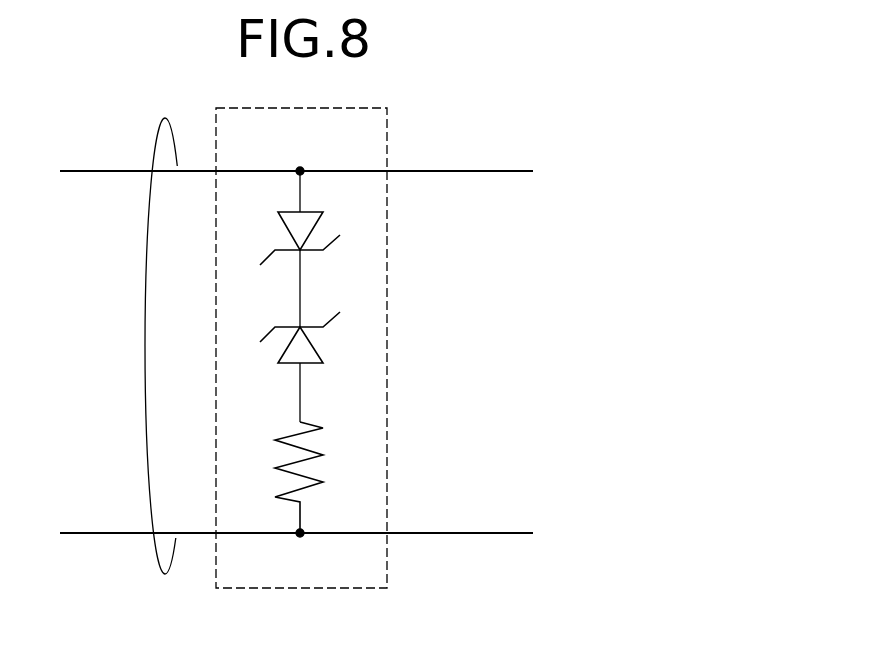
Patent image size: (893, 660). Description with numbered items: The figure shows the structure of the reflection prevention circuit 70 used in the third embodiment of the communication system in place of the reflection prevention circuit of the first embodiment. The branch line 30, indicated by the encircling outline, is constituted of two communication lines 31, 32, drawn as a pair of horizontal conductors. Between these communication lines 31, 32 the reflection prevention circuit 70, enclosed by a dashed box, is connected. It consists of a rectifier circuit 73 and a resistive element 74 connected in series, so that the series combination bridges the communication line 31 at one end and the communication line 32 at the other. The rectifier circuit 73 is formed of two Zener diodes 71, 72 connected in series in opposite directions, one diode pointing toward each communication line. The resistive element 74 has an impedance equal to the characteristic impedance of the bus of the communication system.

The communication line 31 is at (85, 171).
The communication line 32 is at (73, 532).
The branch line 30 is at (165, 574).
The reflection prevention circuit 70 is at (388, 132).
The Zener diode 71 is at (317, 227).
The Zener diode 72 is at (313, 345).
The rectifier circuit 73 is at (323, 295).
The resistive element 74 is at (333, 458).